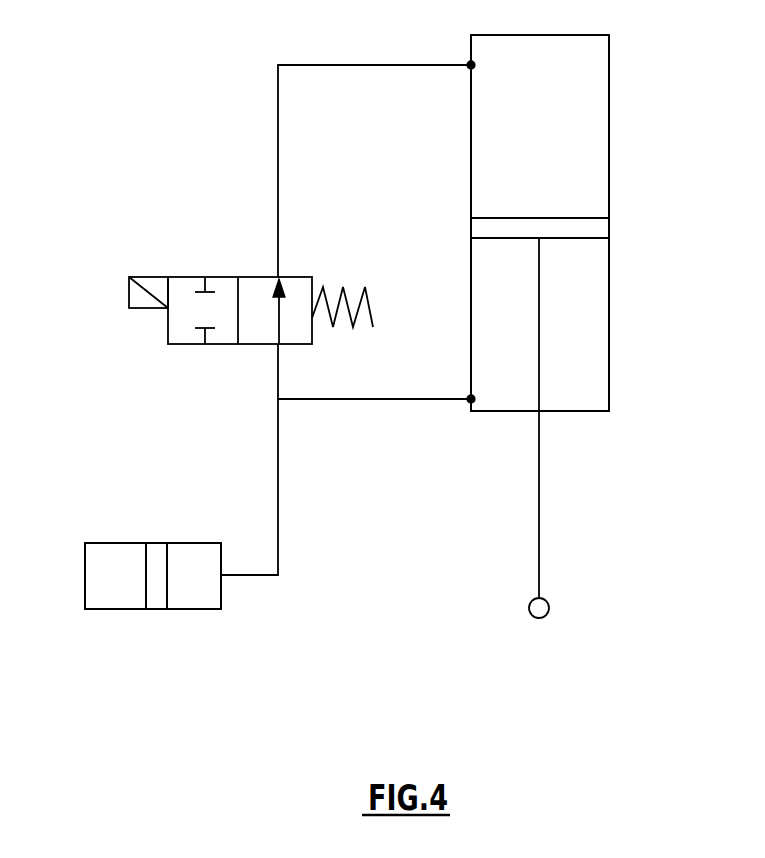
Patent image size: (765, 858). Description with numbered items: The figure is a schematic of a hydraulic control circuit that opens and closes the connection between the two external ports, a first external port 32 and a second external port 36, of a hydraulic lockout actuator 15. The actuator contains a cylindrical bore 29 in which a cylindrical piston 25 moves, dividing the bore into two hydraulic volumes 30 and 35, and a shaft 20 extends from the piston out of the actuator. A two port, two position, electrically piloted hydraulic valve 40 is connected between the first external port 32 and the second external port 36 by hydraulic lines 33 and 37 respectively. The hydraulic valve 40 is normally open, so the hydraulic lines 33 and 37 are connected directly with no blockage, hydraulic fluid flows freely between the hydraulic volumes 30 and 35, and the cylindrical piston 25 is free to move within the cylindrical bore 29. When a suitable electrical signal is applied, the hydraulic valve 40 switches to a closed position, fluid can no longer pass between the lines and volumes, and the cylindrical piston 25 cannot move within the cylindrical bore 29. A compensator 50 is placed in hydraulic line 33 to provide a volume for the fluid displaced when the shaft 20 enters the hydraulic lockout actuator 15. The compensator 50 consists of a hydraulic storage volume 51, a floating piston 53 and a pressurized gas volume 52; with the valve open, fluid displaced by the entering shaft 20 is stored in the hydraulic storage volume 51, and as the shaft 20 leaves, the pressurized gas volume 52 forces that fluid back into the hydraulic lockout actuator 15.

The hydraulic lockout actuator 15 is at (640, 192).
The shaft 20 is at (540, 483).
The cylindrical piston 25 is at (597, 228).
The cylindrical bore 29 is at (610, 317).
The hydraulic volume 30 is at (580, 347).
The first external port 32 is at (470, 402).
The hydraulic line 33 is at (325, 401).
The hydraulic volume 35 is at (580, 106).
The second external port 36 is at (468, 63).
The hydraulic line 37 is at (277, 100).
The hydraulic valve 40 is at (163, 265).
The compensator 50 is at (87, 522).
The hydraulic storage volume 51 is at (198, 585).
The pressurized gas volume 52 is at (112, 590).
The floating piston 53 is at (158, 600).